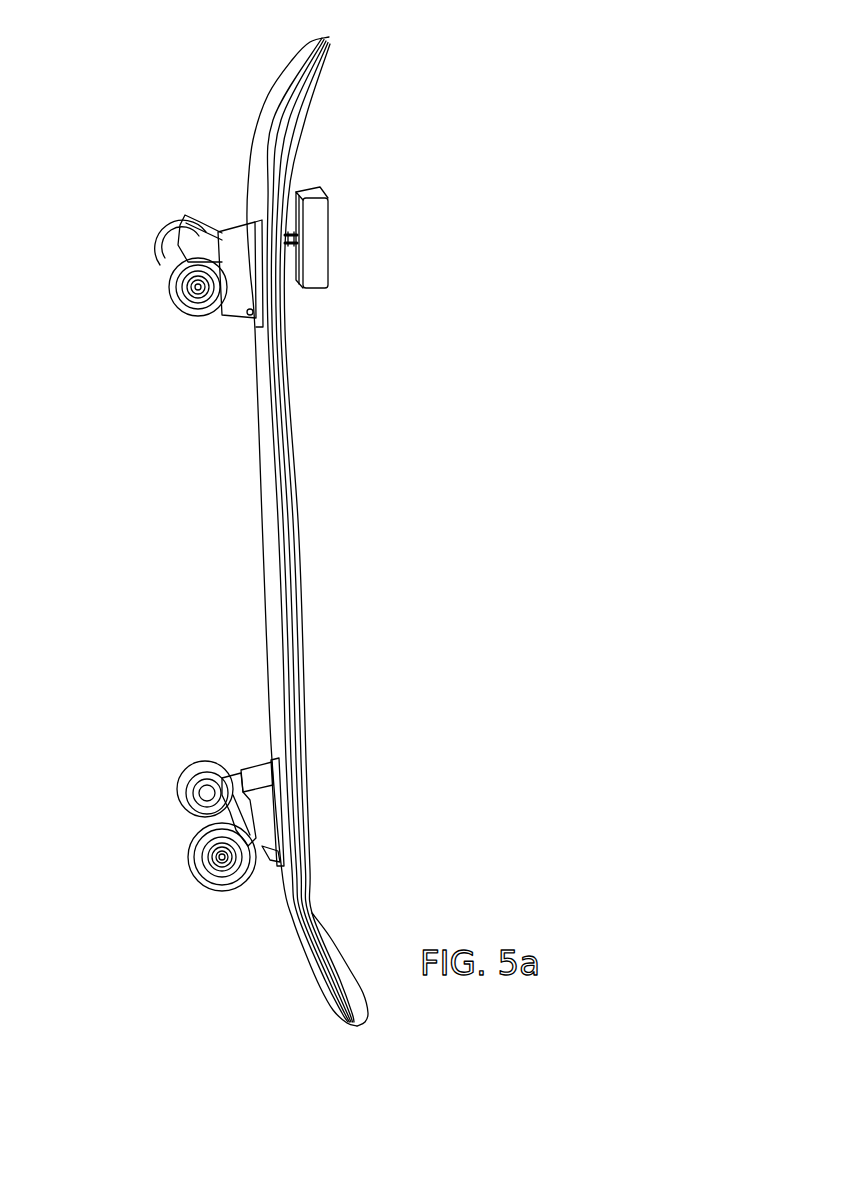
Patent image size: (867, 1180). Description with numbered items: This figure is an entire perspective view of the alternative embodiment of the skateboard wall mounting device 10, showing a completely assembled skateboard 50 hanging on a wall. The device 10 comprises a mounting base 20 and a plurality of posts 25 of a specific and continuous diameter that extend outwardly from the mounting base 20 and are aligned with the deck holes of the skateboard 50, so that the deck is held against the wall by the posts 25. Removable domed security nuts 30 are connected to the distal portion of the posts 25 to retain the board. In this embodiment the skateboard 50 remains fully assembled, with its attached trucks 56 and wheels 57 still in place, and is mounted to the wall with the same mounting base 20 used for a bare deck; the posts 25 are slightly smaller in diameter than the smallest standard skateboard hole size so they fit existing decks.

The skateboard wall mounting device 10 is at (293, 525).
The mounting base 20 is at (330, 231).
The posts 25 is at (293, 252).
The removable domed security nuts 30 is at (185, 230).
The skateboard 50 is at (265, 518).
The trucks 56 is at (228, 227).
The wheels 57 is at (173, 303).